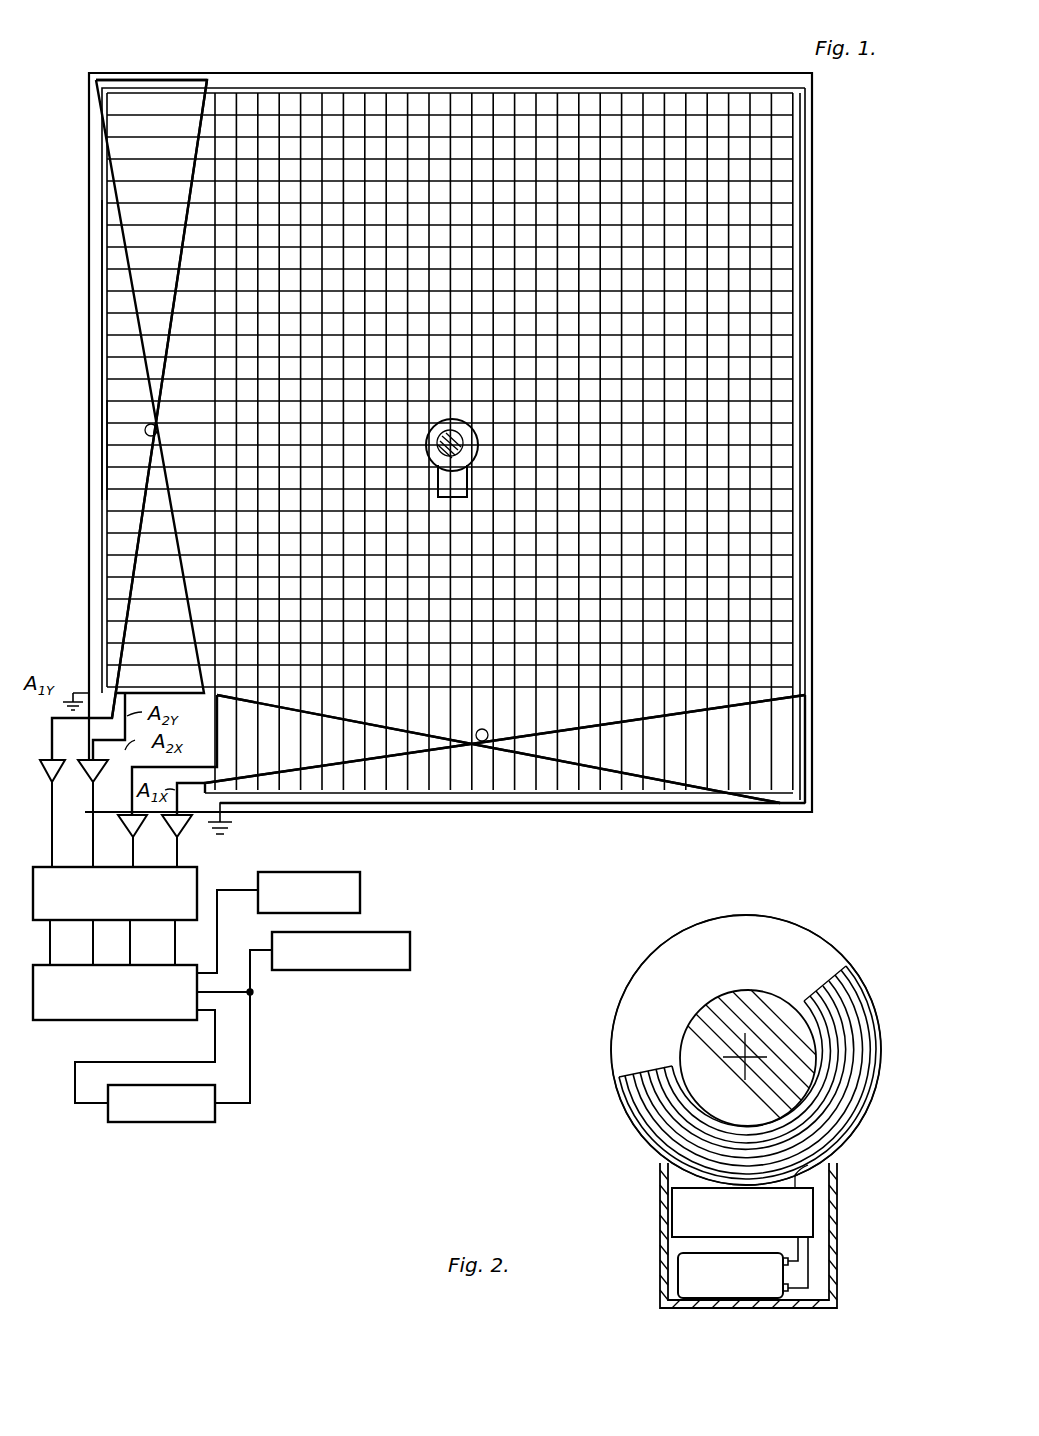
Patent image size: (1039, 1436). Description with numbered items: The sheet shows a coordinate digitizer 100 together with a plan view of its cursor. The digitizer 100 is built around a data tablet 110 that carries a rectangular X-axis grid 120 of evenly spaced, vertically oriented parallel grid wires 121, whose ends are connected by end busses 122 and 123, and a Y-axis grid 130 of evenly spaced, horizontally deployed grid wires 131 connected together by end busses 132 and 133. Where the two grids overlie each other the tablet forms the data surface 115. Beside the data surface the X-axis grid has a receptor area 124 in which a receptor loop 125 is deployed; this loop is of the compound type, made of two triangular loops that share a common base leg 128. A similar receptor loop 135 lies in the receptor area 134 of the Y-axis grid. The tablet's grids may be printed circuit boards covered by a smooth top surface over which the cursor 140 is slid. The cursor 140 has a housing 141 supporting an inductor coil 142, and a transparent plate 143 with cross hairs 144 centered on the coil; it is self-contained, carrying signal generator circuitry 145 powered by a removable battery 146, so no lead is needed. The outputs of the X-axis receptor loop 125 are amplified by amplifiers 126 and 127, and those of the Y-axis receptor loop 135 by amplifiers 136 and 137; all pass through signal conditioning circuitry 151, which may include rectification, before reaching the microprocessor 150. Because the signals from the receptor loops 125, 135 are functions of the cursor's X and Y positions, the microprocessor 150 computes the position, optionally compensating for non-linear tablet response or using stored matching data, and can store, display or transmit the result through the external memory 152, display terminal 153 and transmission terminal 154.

In FIG. 1, the coordinate digitizer 100 is at (75, 181).
In FIG. 1, the data tablet 110 is at (830, 610).
In FIG. 1, the data surface 115 is at (735, 194).
In FIG. 1, the X-axis grid 120 is at (772, 243).
In FIG. 1, the grid wires 121 is at (755, 330).
In FIG. 1, the end buss 122 is at (457, 800).
In FIG. 1, the end buss 123 is at (498, 86).
In FIG. 1, the receptor area 124 is at (540, 782).
In FIG. 1, the receptor loop 125 is at (657, 790).
In FIG. 1, the amplifier 126 is at (125, 823).
In FIG. 1, the amplifier 127 is at (168, 823).
In FIG. 1, the common base leg 128 is at (400, 805).
In FIG. 1, the Y-axis grid 130 is at (725, 283).
In FIG. 1, the grid wires 131 is at (143, 280).
In FIG. 1, the end buss 132 is at (122, 327).
In FIG. 1, the end buss 133 is at (800, 512).
In FIG. 1, the receptor area 134 is at (124, 450).
In FIG. 1, the receptor loop 135 is at (132, 527).
In FIG. 1, the amplifier 136 is at (45, 778).
In FIG. 1, the amplifier 137 is at (85, 780).
In FIG. 1, the cursor 140 is at (500, 458).
In FIG. 2, the cursor 140 is at (872, 943).
In FIG. 2, the housing 141 is at (884, 1013).
In FIG. 2, the inductor coil 142 is at (850, 1090).
In FIG. 2, the transparent plate 143 is at (697, 1022).
In FIG. 2, the cross hairs 144 is at (743, 1060).
In FIG. 2, the signal generator circuitry 145 is at (815, 1222).
In FIG. 2, the battery 146 is at (710, 1300).
In FIG. 1, the microprocessor 150 is at (55, 1022).
In FIG. 1, the signal conditioning circuitry 151 is at (190, 866).
In FIG. 1, the external memory 152 is at (178, 1126).
In FIG. 1, the display terminal 153 is at (364, 898).
In FIG. 1, the transmission terminal 154 is at (372, 972).